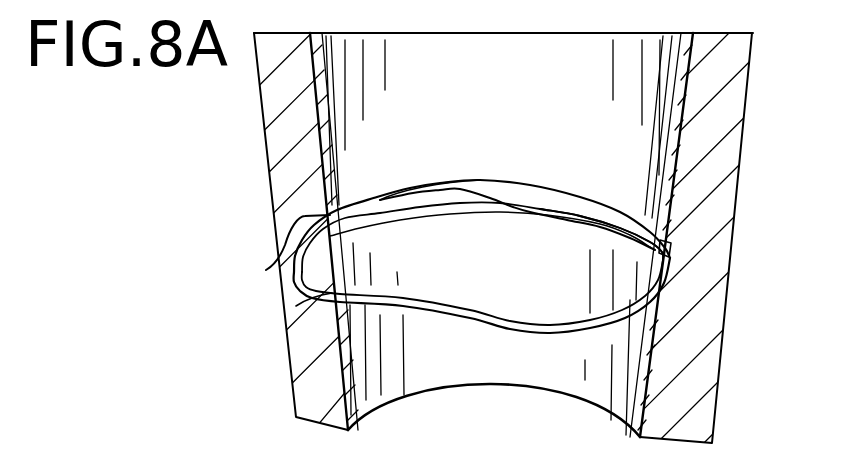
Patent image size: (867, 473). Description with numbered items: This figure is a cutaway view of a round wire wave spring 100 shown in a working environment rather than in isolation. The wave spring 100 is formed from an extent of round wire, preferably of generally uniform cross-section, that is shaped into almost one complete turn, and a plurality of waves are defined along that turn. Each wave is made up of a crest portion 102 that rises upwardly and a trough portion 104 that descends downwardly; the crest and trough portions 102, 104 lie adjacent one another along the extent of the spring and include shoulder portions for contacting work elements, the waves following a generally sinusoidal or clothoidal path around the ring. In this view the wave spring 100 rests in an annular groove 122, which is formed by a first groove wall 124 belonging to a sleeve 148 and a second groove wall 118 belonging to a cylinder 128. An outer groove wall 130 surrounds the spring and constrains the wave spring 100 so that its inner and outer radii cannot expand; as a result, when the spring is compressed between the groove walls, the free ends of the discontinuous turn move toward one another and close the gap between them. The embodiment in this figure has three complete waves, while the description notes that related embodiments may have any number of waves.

The round wire wave spring 100 is at (616, 320).
The crest portion 102 is at (641, 210).
The trough portion 104 is at (526, 212).
The second groove wall 118 is at (297, 307).
The annular groove 122 is at (266, 270).
The first groove wall 124 is at (673, 262).
The cylinder 128 is at (698, 399).
The outer groove wall 130 is at (548, 183).
The sleeve 148 is at (650, 125).